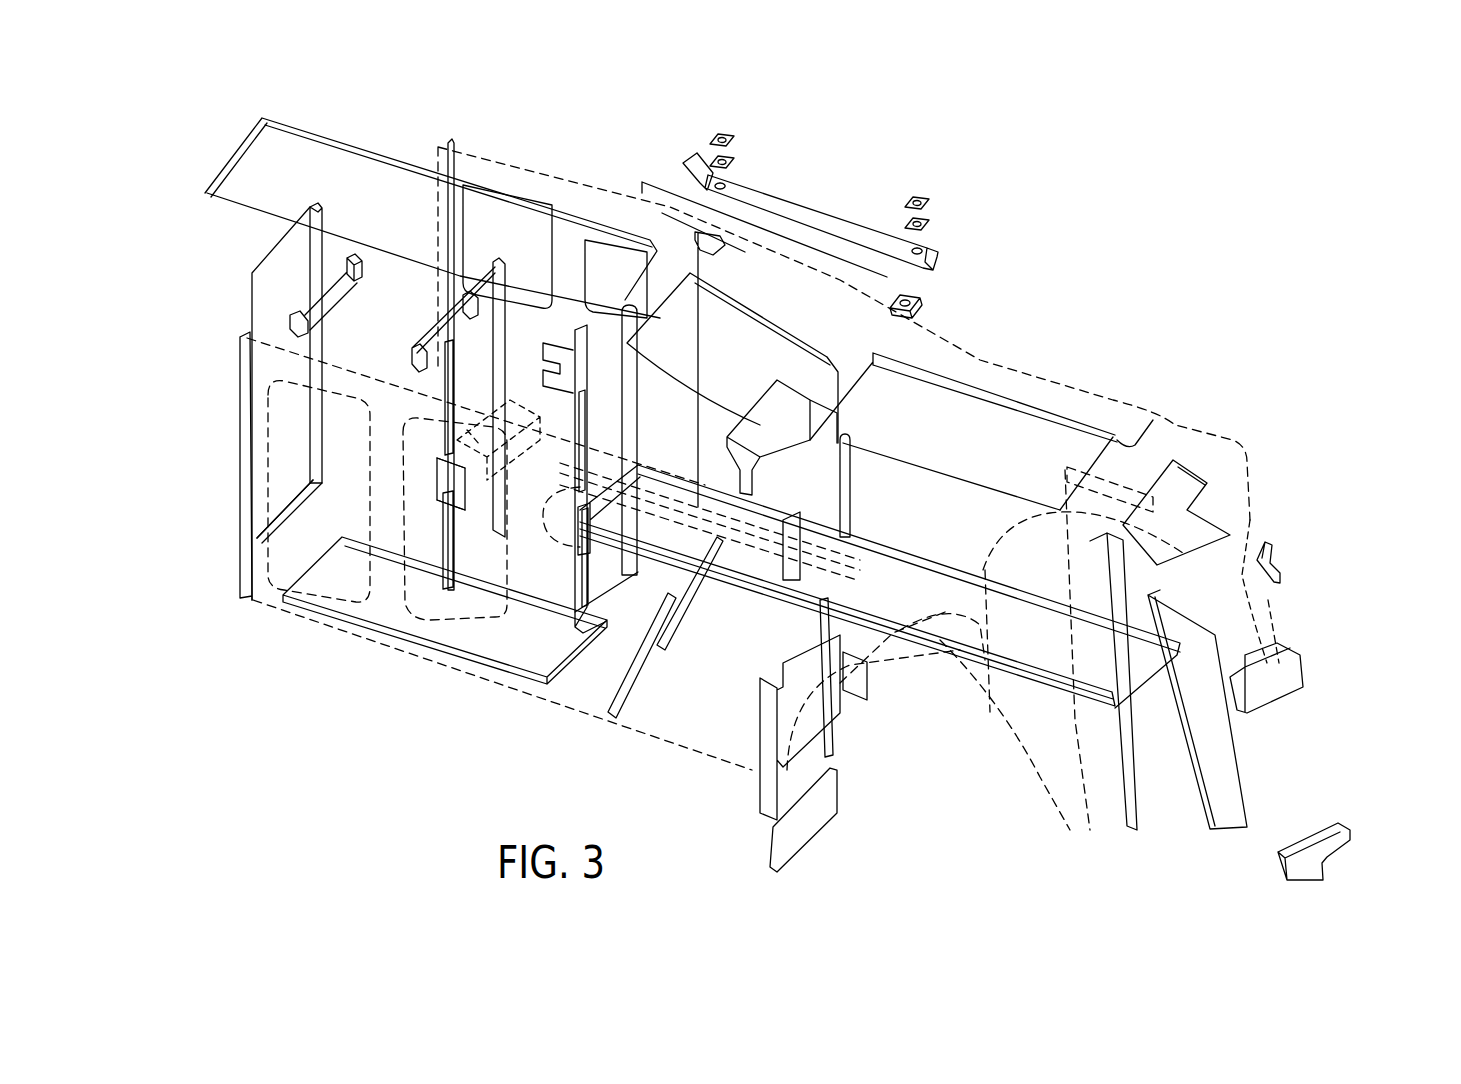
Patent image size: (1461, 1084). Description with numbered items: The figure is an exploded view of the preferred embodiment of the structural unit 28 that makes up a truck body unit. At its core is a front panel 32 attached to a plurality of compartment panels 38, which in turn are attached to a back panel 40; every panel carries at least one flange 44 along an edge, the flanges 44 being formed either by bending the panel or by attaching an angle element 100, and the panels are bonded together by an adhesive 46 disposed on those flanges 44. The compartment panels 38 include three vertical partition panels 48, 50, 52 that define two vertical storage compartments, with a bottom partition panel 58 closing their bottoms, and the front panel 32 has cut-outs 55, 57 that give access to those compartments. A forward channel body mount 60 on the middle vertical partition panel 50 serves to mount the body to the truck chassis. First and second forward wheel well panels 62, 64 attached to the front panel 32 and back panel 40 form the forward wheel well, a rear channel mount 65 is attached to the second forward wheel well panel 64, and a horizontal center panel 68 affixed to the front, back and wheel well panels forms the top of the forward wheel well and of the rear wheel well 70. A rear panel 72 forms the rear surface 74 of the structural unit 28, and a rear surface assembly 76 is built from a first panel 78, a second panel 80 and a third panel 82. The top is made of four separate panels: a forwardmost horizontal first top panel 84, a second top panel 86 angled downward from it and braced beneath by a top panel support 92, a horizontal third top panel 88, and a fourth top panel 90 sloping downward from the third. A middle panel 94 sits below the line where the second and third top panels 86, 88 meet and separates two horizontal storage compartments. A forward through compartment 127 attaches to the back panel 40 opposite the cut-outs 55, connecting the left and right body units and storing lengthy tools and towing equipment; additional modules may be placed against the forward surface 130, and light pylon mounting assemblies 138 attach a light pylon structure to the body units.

The structural unit 28 is at (1097, 290).
The front panel 32 is at (670, 737).
The compartment panels 38 is at (320, 200).
The back panel 40 is at (1127, 397).
The flange 44 is at (397, 163).
The adhesive 46 is at (277, 118).
The vertical partition panel 48 is at (217, 597).
The middle vertical partition panel 50 is at (423, 582).
The vertical partition panel 52 is at (518, 620).
The cut-out 55 is at (300, 513).
The cut-out 57 is at (445, 598).
The bottom partition panel 58 is at (460, 660).
The forward channel body mount 60 is at (437, 490).
The first forward wheel well panel 62 is at (605, 713).
The second forward wheel well panel 64 is at (747, 797).
The rear channel mount 65 is at (853, 697).
The horizontal center panel 68 is at (970, 667).
The rear wheel well 70 is at (937, 770).
The rear panel 72 is at (1120, 820).
The rear surface 74 is at (1150, 750).
The rear surface assembly 76 is at (1287, 567).
The first panel 78 is at (1297, 543).
The second panel 80 is at (1273, 710).
The third panel 82 is at (1338, 855).
The first top panel 84 is at (323, 127).
The second top panel 86 is at (807, 337).
The third top panel 88 is at (1030, 400).
The fourth top panel 90 is at (1197, 460).
The top panel support 92 is at (823, 393).
The middle panel 94 is at (773, 560).
The angle element 100 is at (760, 620).
The forward through compartment 127 is at (507, 217).
The forward surface 130 is at (237, 333).
The light pylon mounting assemblies 138 is at (890, 183).